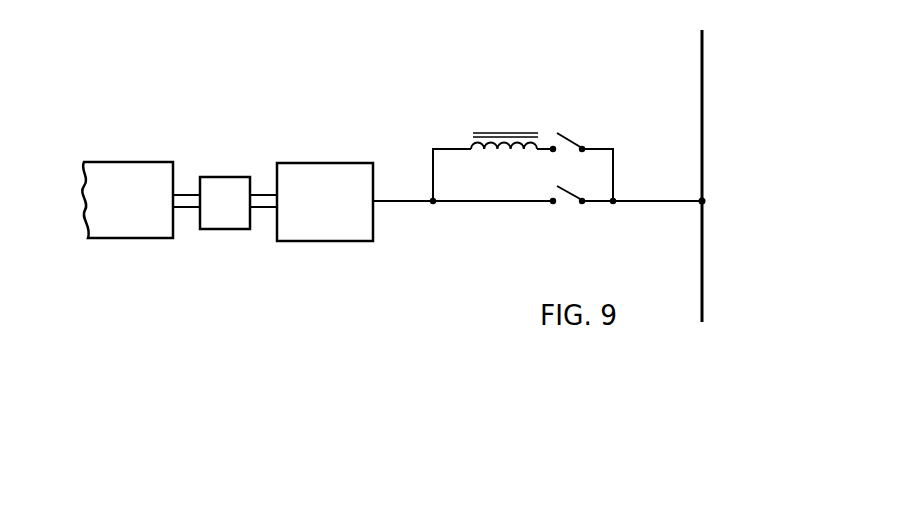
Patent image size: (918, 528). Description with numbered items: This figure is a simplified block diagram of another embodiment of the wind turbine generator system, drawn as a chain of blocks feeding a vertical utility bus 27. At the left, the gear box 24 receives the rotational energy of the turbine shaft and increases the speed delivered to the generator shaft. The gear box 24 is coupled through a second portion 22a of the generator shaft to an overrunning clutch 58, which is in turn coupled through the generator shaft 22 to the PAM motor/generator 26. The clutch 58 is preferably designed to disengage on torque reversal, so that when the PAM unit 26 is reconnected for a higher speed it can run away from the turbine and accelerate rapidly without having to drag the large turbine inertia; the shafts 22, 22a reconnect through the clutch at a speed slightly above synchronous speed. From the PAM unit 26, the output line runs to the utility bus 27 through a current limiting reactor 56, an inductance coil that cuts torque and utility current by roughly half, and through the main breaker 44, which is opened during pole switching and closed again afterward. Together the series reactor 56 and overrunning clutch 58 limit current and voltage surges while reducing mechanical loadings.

The gear box 24 is at (116, 212).
The overrunning clutch 58 is at (213, 213).
The PAM motor/generator 26 is at (314, 212).
The second portion of the generator shaft 22a is at (186, 197).
The generator shaft 22 is at (260, 201).
The current limiting reactor 56 is at (504, 131).
The main breaker 44 is at (572, 197).
The utility bus 27 is at (704, 151).